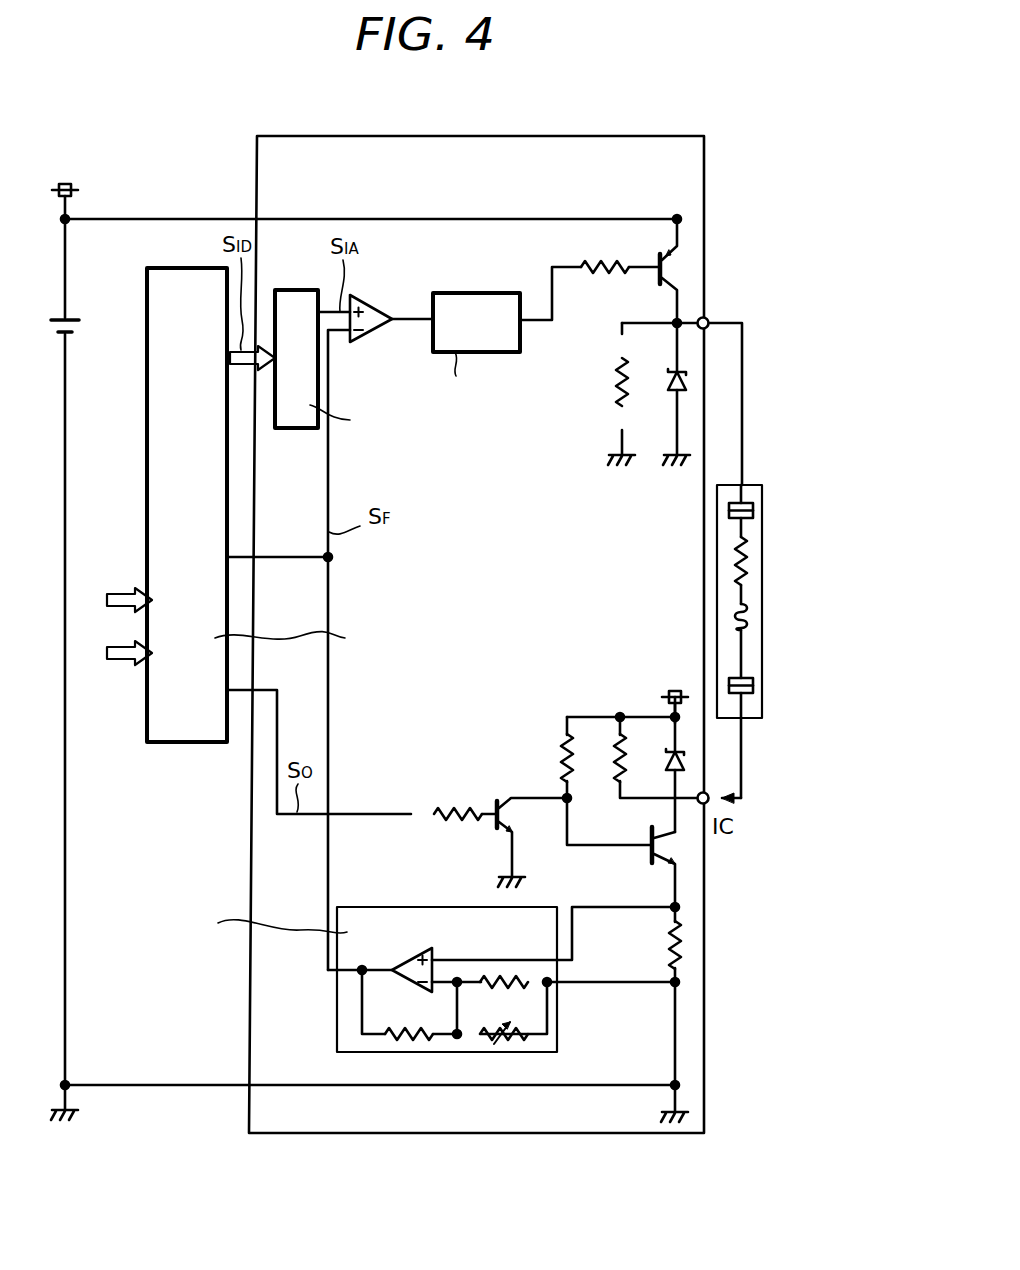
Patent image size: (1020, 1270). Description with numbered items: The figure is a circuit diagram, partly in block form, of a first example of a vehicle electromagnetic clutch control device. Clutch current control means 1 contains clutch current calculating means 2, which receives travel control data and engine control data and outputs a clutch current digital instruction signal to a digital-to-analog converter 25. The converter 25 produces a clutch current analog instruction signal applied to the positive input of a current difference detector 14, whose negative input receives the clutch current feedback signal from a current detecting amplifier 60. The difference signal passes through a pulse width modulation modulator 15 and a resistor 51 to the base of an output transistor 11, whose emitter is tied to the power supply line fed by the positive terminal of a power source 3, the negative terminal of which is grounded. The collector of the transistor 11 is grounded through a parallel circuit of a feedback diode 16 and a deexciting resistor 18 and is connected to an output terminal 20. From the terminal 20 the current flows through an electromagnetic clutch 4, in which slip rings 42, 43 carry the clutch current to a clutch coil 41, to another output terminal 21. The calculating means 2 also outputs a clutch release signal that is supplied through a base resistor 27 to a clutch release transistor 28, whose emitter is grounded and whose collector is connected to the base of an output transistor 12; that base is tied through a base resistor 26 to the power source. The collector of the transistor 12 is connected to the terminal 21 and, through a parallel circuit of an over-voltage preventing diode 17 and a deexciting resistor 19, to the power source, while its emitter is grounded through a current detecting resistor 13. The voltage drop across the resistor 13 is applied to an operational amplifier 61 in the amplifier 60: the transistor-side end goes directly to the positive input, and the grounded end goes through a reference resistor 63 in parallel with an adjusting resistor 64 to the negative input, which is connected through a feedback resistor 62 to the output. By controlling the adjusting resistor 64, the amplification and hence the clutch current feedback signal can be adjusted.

The clutch current control means 1 is at (706, 178).
The clutch current calculating means 2 is at (176, 268).
The power source 3 is at (72, 318).
The electromagnetic clutch 4 is at (762, 610).
The output transistor 11 is at (668, 272).
The output transistor 12 is at (650, 856).
The current detecting resistor 13 is at (668, 950).
The current difference detector 14 is at (376, 300).
The pulse width modulation modulator 15 is at (498, 293).
The feedback diode 16 is at (668, 385).
The over-voltage preventing diode 17 is at (667, 766).
The deexciting resistor 18 is at (618, 372).
The deexciting resistor 19 is at (616, 762).
The output terminal 20 is at (708, 320).
The output terminal 21 is at (707, 793).
The digital-to-analog converter 25 is at (298, 290).
The base resistor 26 is at (563, 752).
The base resistor 27 is at (458, 806).
The clutch release transistor 28 is at (501, 800).
The clutch coil 41 is at (748, 616).
The slip ring 42 is at (754, 510).
The slip ring 43 is at (754, 686).
The resistor 51 is at (600, 266).
The current detecting amplifier 60 is at (381, 947).
The operational amplifier 61 is at (404, 960).
The feedback resistor 62 is at (404, 1030).
The reference resistor 63 is at (500, 990).
The adjusting resistor 64 is at (510, 1032).